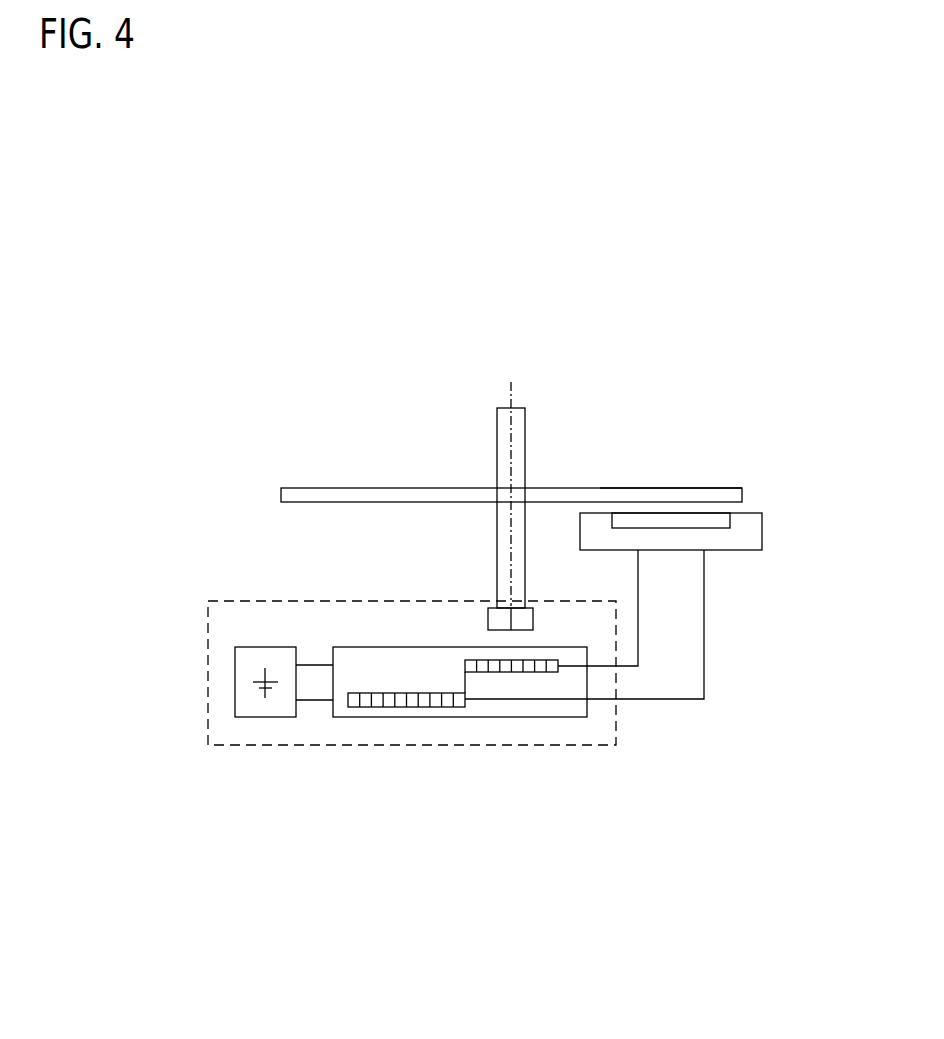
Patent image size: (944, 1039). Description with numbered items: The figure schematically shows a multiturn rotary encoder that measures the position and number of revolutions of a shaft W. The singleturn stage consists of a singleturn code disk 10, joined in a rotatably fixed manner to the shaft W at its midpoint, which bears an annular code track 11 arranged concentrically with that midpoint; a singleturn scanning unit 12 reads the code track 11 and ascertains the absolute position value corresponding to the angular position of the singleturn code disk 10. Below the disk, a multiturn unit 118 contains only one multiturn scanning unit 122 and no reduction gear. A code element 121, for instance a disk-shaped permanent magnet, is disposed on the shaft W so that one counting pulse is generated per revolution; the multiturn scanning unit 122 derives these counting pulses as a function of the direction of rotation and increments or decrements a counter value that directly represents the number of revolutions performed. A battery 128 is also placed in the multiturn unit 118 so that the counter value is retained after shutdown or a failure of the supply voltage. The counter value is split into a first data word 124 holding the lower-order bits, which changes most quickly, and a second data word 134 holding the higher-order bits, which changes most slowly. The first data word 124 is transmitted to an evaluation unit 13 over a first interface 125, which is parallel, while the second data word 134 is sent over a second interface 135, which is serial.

The shaft W is at (517, 428).
The singleturn code disk 10 is at (293, 498).
The code track 11 is at (683, 494).
The singleturn scanning unit 12 is at (722, 525).
The evaluation unit 13 is at (740, 543).
The multiturn unit 118 is at (258, 601).
The code element 121 is at (488, 608).
The multiturn scanning unit 122 is at (557, 718).
The first data word 124 is at (487, 660).
The first interface 125 is at (638, 580).
The battery 128 is at (273, 717).
The second data word 134 is at (418, 707).
The second interface 135 is at (705, 637).